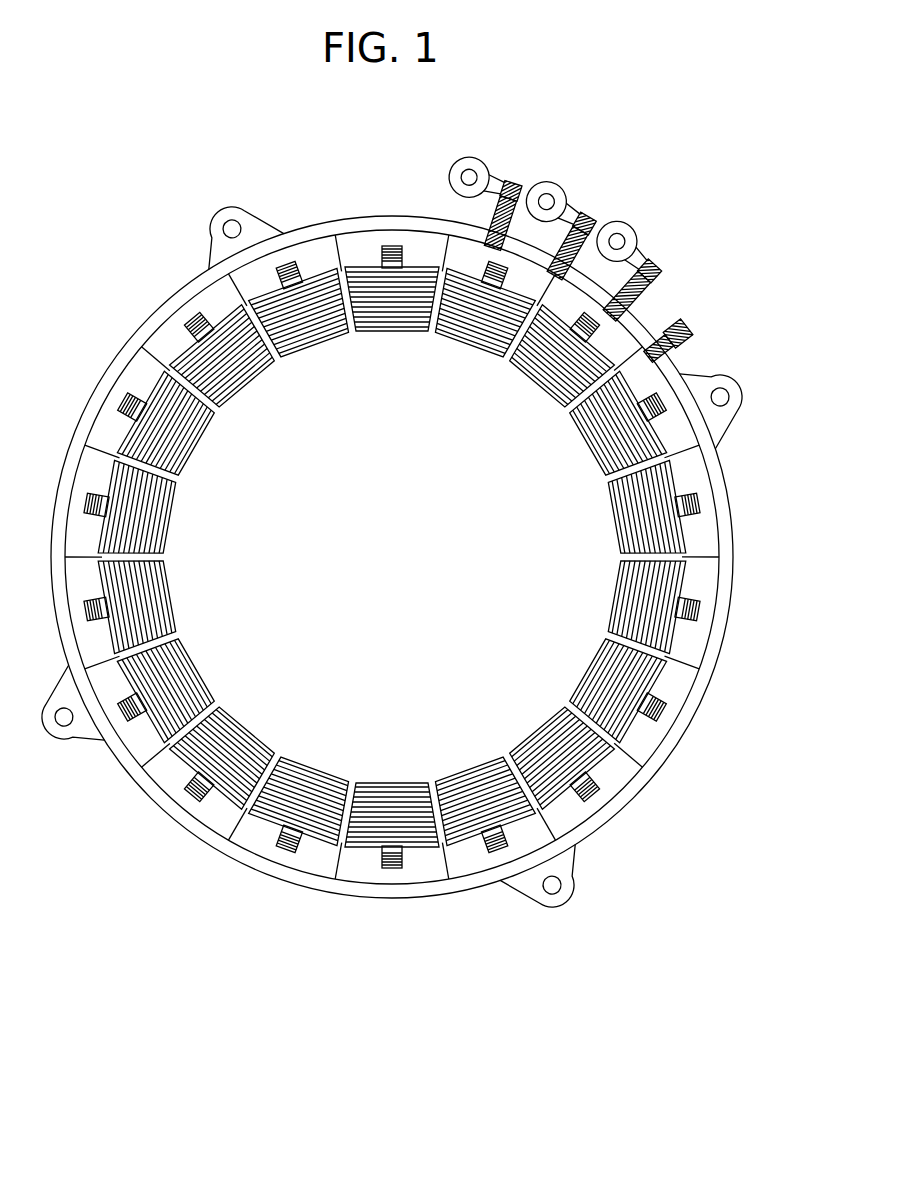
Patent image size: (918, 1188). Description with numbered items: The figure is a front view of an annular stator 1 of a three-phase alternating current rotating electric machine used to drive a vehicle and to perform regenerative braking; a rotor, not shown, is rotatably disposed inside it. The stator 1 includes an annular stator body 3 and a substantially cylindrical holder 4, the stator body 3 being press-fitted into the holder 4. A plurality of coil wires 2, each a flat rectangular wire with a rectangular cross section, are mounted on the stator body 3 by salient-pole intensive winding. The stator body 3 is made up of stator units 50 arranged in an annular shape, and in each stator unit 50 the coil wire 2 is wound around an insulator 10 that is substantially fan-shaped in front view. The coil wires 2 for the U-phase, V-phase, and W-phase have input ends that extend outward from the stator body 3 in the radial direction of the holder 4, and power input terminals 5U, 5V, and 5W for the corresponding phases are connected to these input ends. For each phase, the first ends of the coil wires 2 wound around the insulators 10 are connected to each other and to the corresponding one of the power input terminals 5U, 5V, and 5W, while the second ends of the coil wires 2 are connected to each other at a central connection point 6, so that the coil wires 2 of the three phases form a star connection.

The stator 1 is at (610, 162).
The coil wire 2 is at (479, 369).
The stator body 3 is at (416, 557).
The holder 4 is at (427, 557).
The power input terminal 5U is at (479, 181).
The power input terminal 5V is at (550, 206).
The power input terminal 5W is at (617, 246).
The central connection point 6 is at (698, 332).
The insulator 10 is at (60, 305).
The stator unit 50 is at (238, 737).